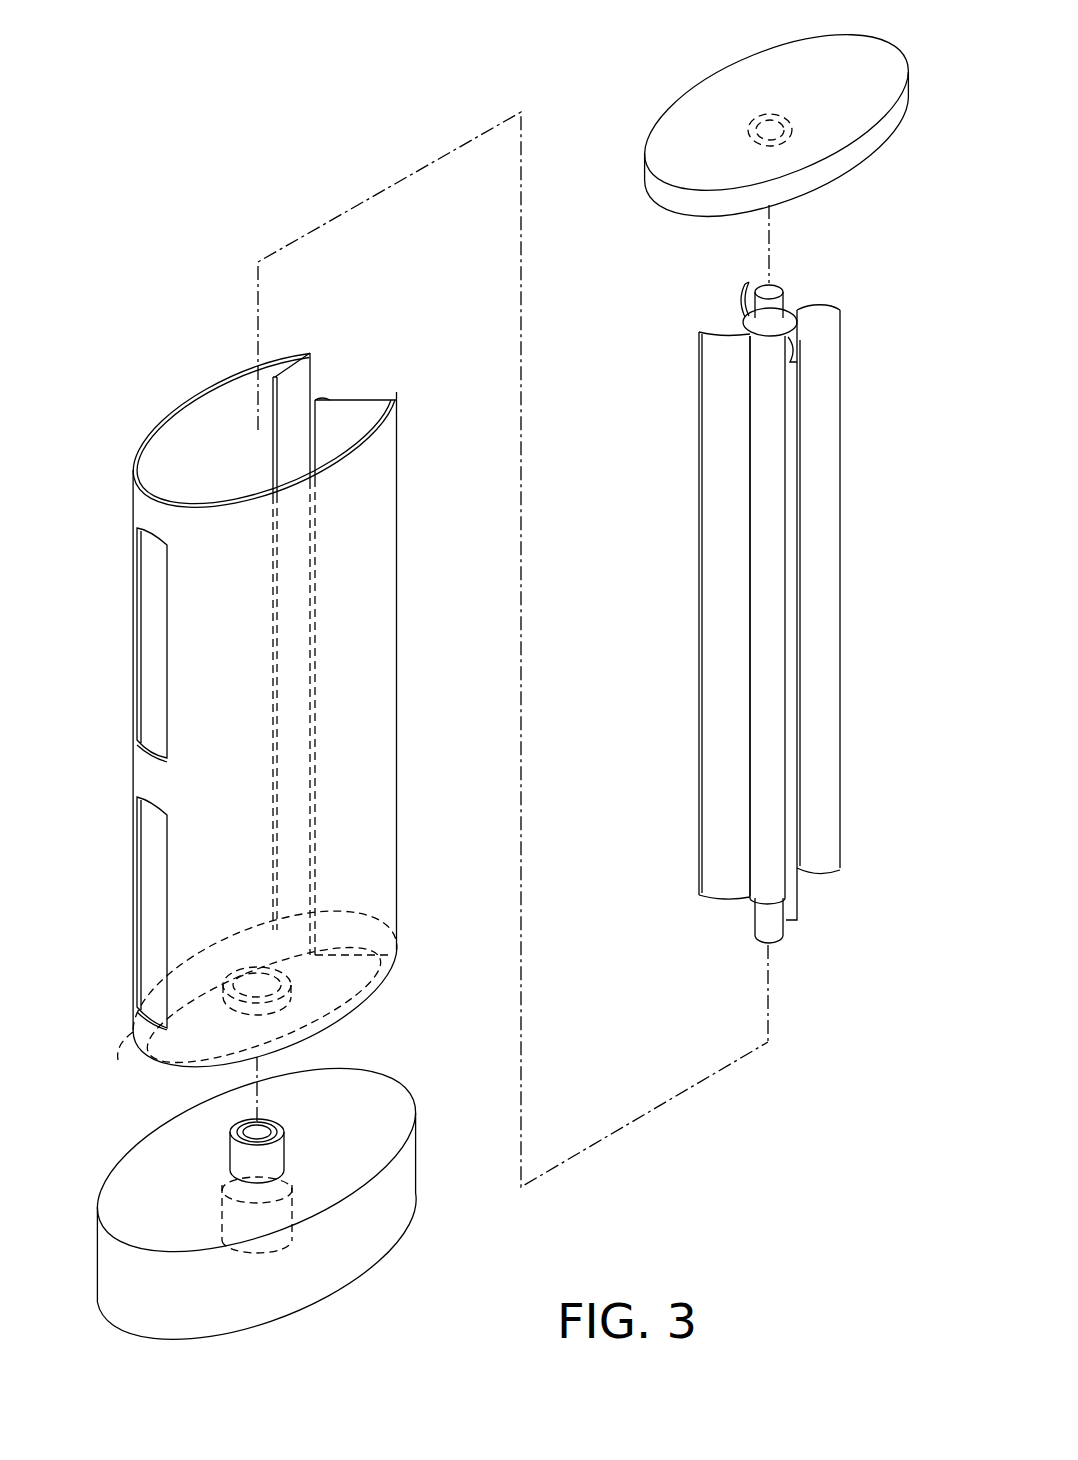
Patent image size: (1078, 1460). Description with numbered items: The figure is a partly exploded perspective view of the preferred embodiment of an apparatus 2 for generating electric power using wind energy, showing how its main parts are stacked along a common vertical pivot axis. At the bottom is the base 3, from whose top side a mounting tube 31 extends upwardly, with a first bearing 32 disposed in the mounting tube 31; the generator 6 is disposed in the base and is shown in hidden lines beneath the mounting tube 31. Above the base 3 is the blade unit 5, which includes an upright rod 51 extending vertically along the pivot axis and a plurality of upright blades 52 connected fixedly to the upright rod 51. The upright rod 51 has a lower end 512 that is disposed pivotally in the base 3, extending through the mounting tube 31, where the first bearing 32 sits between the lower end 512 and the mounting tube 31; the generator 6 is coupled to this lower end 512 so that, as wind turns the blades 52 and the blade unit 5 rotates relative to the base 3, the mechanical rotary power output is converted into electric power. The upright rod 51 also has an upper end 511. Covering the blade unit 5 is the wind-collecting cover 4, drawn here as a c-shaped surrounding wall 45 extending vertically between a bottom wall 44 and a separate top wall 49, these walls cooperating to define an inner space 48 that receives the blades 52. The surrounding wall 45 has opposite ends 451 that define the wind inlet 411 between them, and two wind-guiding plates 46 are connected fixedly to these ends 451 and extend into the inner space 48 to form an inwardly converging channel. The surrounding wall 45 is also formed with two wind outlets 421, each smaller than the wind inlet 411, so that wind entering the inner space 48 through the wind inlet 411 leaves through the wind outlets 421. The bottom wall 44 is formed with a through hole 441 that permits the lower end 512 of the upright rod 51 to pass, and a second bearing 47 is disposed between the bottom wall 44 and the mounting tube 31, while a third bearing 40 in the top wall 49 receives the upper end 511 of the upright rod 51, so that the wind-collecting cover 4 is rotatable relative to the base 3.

The apparatus for generating electric power using wind energy 2 is at (332, 122).
The base 3 is at (256, 1188).
The mounting tube 31 is at (215, 1140).
The first bearing 32 is at (320, 1108).
The wind-collecting cover 4 is at (282, 659).
The third bearing 40 is at (770, 115).
The wind inlet 411 is at (352, 386).
The wind outlets 421 is at (150, 650).
The bottom wall 44 is at (130, 1062).
The through hole 441 is at (345, 1040).
The surrounding wall 45 is at (402, 858).
The opposite ends of the surrounding wall 451 is at (303, 376).
The wind-guiding plates 46 is at (312, 384).
The second bearing 47 is at (372, 982).
The inner space 48 is at (232, 420).
The top wall 49 is at (741, 113).
The blade unit 5 is at (734, 580).
The upright rod 51 is at (745, 520).
The upper end of the upright rod 511 is at (790, 300).
The lower end of the upright rod 512 is at (755, 912).
The upright blades 52 is at (700, 465).
The generator 6 is at (300, 1243).